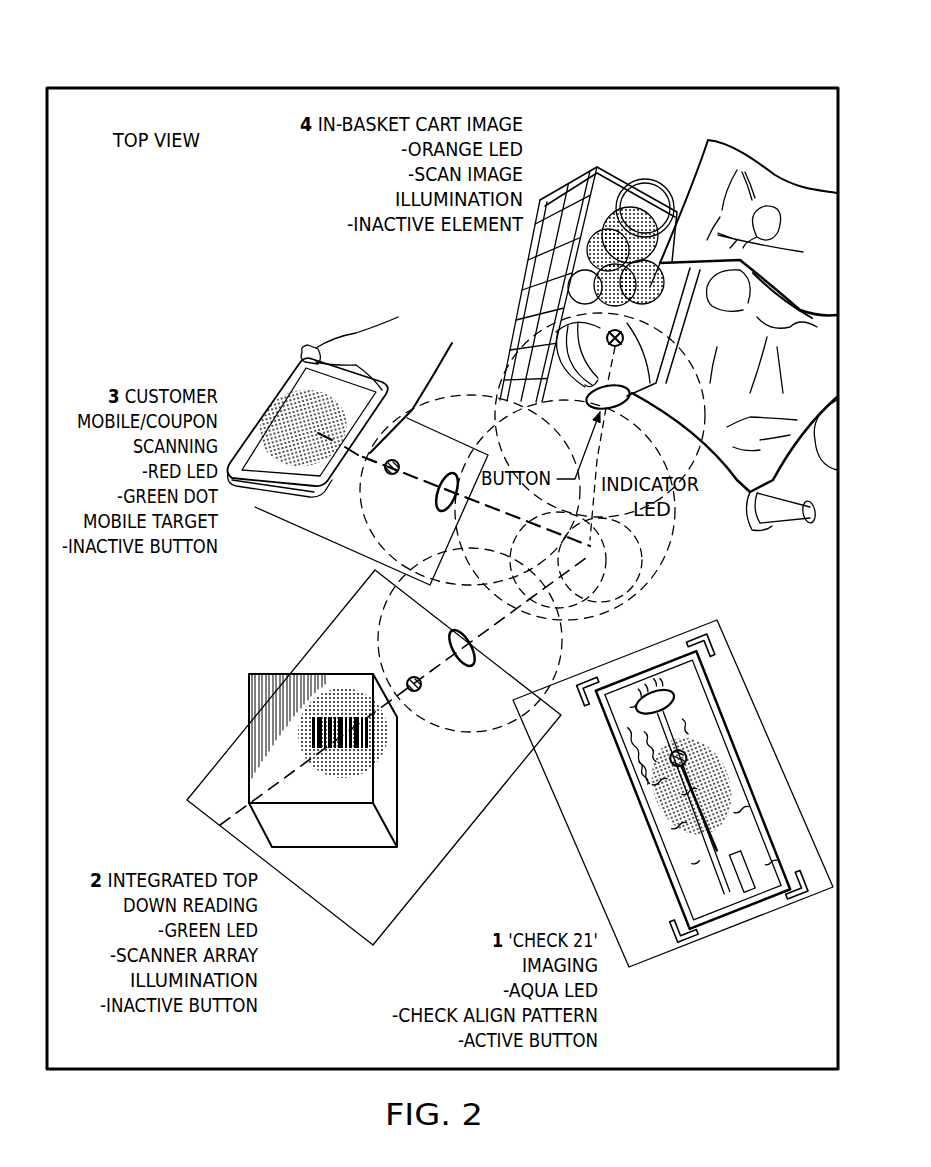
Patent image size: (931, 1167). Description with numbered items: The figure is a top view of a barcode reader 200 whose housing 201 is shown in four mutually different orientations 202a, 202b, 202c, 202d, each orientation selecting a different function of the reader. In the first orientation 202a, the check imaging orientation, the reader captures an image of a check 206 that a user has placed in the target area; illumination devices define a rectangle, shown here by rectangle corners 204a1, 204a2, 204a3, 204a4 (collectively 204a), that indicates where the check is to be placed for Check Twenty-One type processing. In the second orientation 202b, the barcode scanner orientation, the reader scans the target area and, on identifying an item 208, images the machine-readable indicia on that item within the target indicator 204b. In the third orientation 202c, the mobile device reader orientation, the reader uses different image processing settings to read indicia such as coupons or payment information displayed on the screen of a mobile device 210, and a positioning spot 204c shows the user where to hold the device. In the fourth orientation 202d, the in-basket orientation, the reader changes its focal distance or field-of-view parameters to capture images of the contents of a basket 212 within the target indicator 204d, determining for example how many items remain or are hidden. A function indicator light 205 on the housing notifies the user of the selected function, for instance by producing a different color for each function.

The barcode reader 200 is at (290, 60).
The housing 201 is at (728, 583).
The first orientation 202a is at (760, 972).
The second orientation 202b is at (496, 817).
The third orientation 202c is at (163, 348).
The fourth orientation 202d is at (698, 512).
The rectangle corners 204a is at (717, 760).
The rectangle corner 204a1 is at (808, 898).
The rectangle corner 204a2 is at (680, 948).
The rectangle corner 204a3 is at (575, 692).
The rectangle corner 204a4 is at (712, 640).
The target indicator 204b is at (353, 773).
The positioning spot 204c is at (298, 390).
The target indicator 204d is at (650, 200).
The function indicator light 205 is at (632, 435).
The check 206 is at (655, 855).
The item 208 is at (249, 712).
The mobile device 210 is at (332, 336).
The basket 212 is at (527, 274).